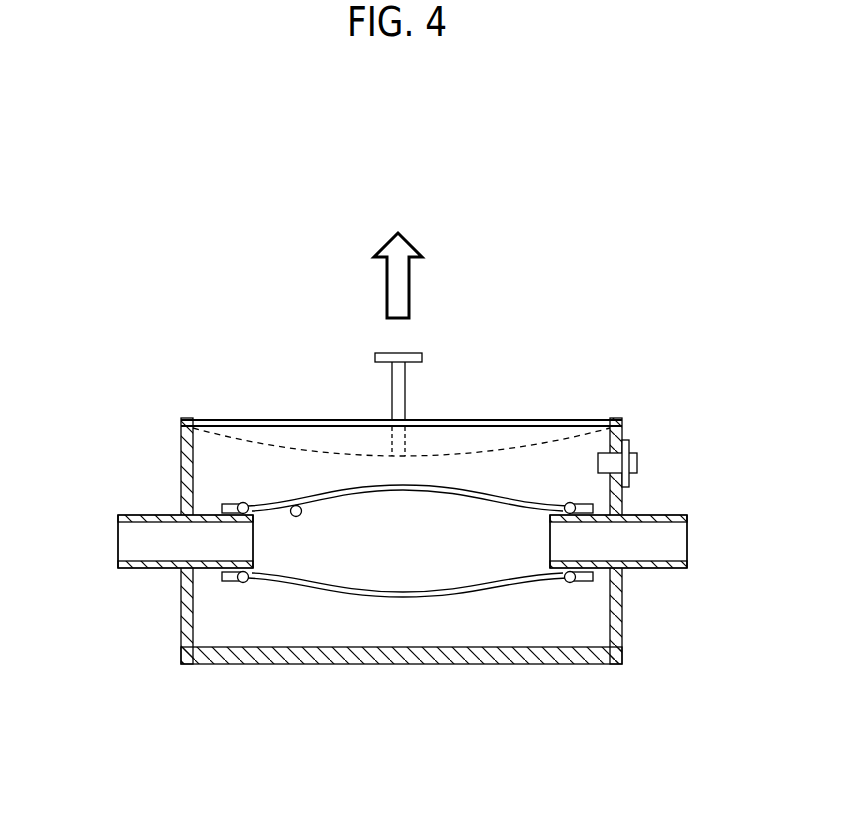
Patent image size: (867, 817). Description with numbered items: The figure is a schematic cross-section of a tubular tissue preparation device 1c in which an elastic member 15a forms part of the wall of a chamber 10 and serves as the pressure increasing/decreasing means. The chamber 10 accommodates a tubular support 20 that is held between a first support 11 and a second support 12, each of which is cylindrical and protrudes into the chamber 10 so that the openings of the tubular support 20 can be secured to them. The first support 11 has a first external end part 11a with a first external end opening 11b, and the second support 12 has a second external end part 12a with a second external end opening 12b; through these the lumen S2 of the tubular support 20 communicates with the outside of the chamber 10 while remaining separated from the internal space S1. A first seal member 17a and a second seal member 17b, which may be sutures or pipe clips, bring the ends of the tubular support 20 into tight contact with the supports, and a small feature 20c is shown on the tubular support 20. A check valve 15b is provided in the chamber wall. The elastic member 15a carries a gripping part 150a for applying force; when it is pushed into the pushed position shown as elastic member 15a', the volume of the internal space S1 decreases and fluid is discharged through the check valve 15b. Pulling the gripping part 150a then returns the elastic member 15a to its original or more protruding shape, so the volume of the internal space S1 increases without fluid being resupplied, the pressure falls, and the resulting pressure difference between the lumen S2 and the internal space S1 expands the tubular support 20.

The tubular tissue preparation device 1c is at (575, 276).
The chamber 10 is at (182, 432).
The first support 11 is at (600, 570).
The first external end part 11a is at (657, 570).
The first external end opening 11b is at (693, 542).
The second support 12 is at (212, 512).
The second external end part 12a is at (136, 514).
The second external end opening 12b is at (110, 546).
The elastic member 15a is at (401, 369).
The pushed elastic member 15a' is at (401, 409).
The check valve 15b is at (626, 442).
The gripping part 150a is at (381, 352).
The first seal member 17a is at (570, 583).
The second seal member 17b is at (243, 583).
The tubular support 20 is at (361, 598).
The tube hole 20c is at (297, 505).
The internal space S1 is at (482, 624).
The lumen S2 is at (497, 530).